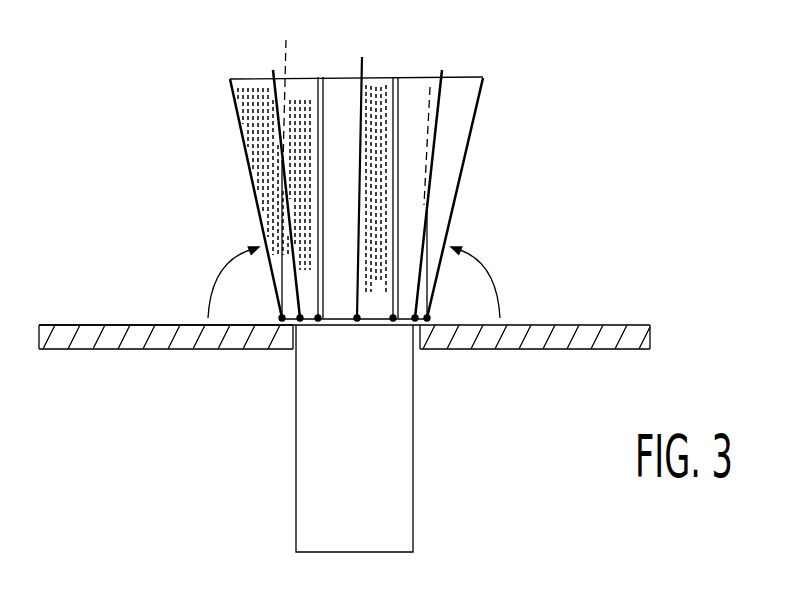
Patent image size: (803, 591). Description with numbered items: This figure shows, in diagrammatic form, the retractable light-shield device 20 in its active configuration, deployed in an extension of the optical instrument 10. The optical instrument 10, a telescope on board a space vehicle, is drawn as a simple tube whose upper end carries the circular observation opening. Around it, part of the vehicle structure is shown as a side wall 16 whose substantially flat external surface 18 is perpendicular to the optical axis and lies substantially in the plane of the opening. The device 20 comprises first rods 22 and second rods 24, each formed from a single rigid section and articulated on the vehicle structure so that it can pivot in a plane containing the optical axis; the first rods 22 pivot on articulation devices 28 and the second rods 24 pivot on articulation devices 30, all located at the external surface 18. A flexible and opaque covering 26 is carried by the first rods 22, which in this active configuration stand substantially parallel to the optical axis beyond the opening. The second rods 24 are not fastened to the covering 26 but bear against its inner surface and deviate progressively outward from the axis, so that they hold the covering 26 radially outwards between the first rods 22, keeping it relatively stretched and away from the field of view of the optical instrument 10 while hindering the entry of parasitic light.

The optical instrument 10 is at (317, 483).
The side wall 16 is at (50, 338).
The external surface 18 is at (92, 325).
The retractable device 20 is at (222, 163).
The first rods 22 is at (393, 117).
The second rods 24 is at (363, 62).
The flexible and opaque covering 26 is at (452, 160).
The articulation devices for the first rods 28 is at (318, 326).
The articulation devices for the second rods 30 is at (358, 326).